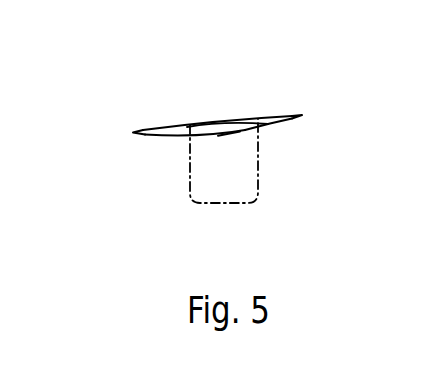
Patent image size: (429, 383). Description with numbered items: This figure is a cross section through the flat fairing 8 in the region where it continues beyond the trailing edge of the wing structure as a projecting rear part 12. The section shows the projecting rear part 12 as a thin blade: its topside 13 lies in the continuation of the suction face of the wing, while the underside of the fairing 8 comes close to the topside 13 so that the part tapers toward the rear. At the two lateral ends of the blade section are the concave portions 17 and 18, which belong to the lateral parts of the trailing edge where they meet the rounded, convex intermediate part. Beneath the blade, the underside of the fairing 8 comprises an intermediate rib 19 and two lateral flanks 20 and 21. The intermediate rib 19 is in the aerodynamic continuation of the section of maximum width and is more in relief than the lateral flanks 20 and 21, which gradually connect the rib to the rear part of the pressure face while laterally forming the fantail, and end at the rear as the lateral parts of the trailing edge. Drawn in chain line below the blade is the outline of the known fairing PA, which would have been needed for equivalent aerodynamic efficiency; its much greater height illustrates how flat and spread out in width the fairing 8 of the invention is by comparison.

The flat fairing 8 is at (176, 101).
The projecting rear part 12 is at (245, 122).
The topside 13 is at (222, 121).
The concave portion 17 is at (133, 132).
The concave portion 18 is at (302, 115).
The intermediate rib 19 is at (230, 137).
The lateral flank 20 is at (160, 137).
The lateral flank 21 is at (273, 124).
The known fairing PA is at (262, 198).